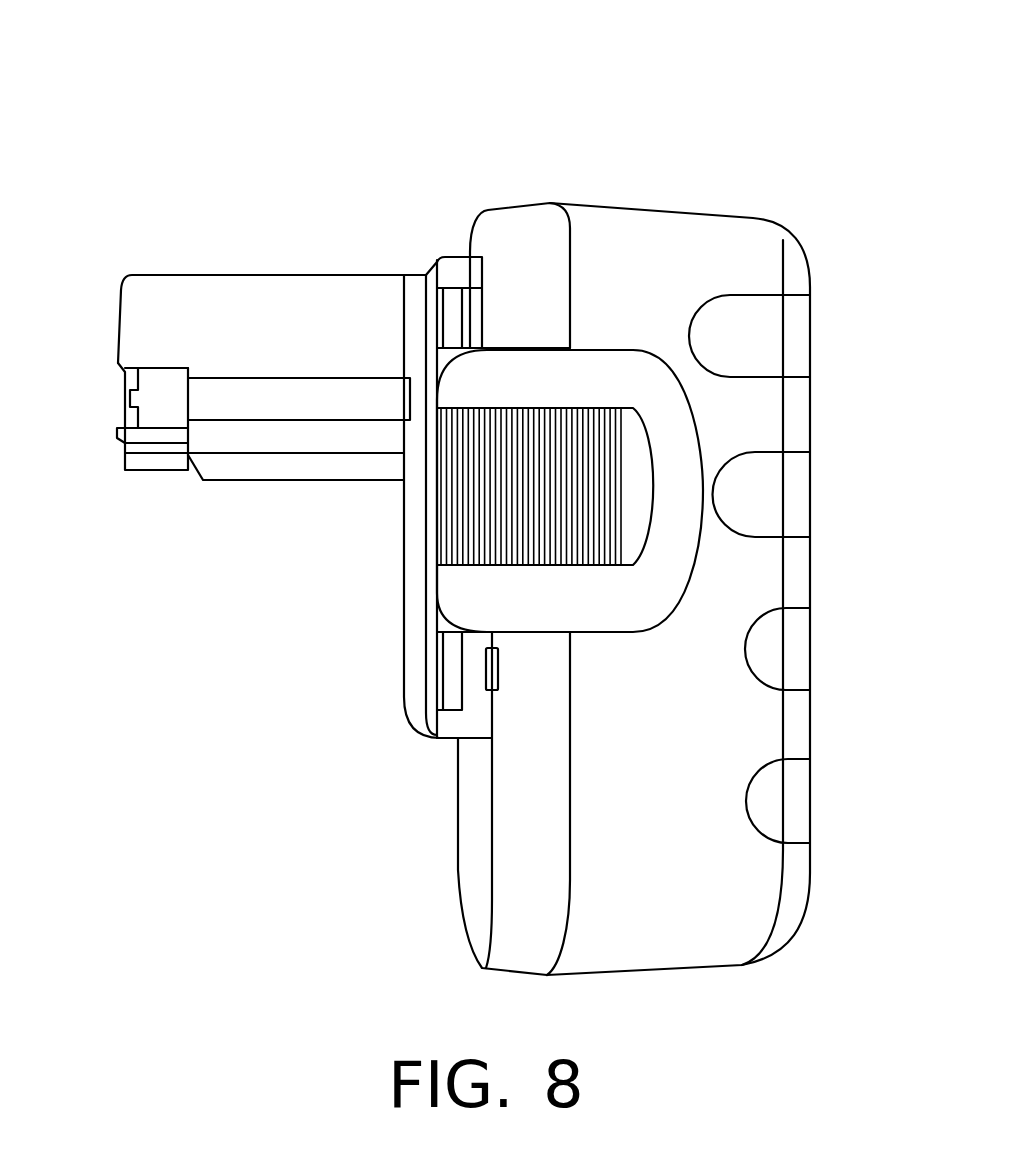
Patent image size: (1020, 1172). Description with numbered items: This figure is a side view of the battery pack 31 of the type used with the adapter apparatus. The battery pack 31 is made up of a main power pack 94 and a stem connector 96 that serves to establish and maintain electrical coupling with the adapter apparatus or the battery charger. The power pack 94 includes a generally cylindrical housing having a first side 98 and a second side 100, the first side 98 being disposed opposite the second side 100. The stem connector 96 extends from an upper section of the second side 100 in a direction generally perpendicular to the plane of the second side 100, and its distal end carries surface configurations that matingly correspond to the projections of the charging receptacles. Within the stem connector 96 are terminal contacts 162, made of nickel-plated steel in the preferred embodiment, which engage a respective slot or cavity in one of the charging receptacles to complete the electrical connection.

The battery pack 31 is at (652, 94).
The power pack 94 is at (525, 201).
The stem connector 96 is at (218, 261).
The first side 98 is at (812, 416).
The second side 100 is at (475, 823).
The terminal contacts 162 is at (165, 391).